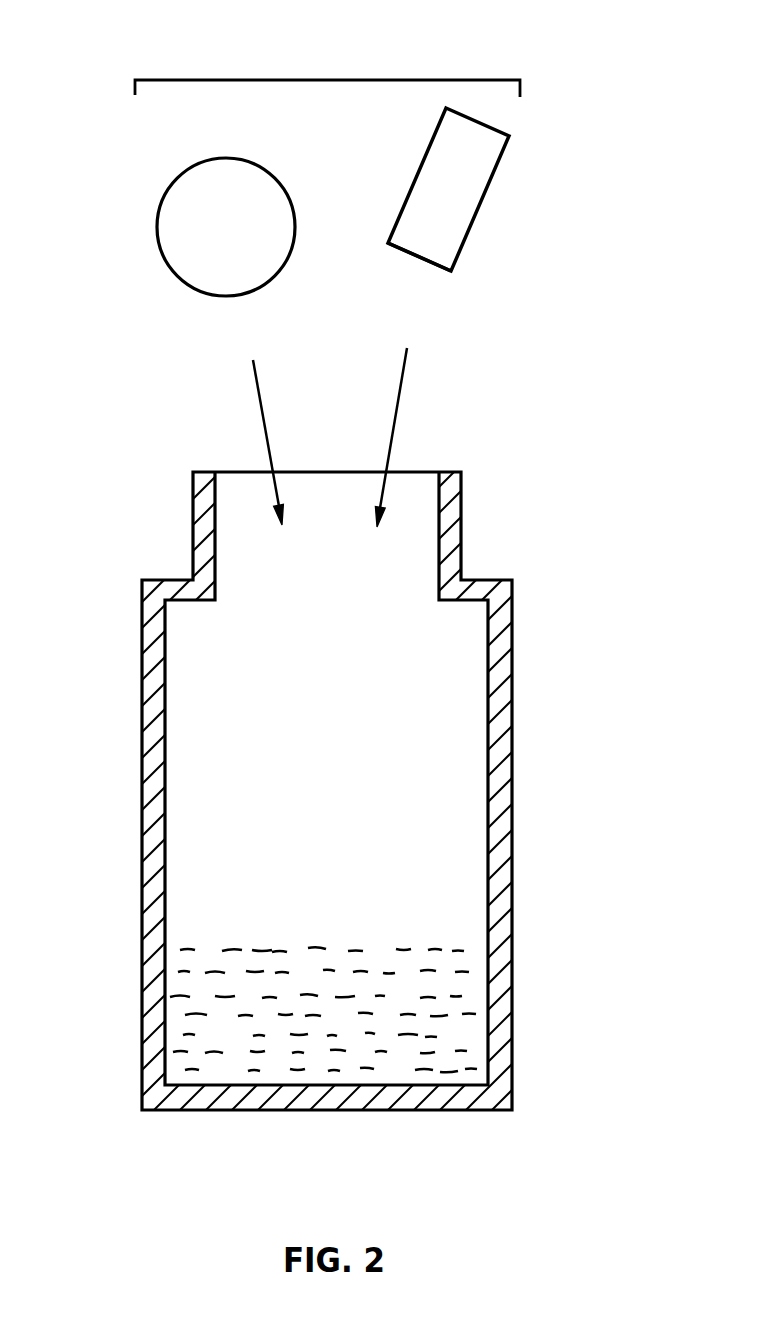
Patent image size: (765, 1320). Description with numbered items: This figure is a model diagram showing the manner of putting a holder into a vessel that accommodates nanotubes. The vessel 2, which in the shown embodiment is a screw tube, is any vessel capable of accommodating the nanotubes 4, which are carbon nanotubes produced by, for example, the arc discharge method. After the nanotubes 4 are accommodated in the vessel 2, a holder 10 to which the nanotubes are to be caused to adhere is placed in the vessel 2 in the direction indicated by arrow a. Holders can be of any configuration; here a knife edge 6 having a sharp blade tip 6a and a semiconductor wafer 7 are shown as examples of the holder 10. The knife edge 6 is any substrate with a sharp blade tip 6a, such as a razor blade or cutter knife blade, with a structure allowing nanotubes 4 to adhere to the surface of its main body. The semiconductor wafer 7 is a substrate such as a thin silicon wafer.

The holder 10 is at (332, 80).
The semiconductor wafer 7 is at (187, 222).
The knife edge 6 is at (468, 195).
The blade tip 6a is at (426, 260).
The arrow a is at (341, 437).
The vessel 2 is at (497, 797).
The nanotubes 4 is at (368, 1053).